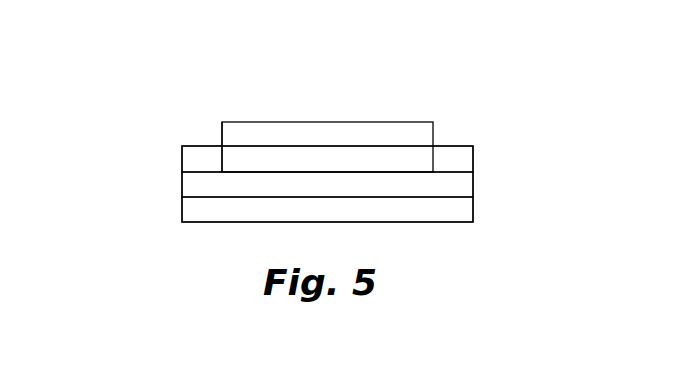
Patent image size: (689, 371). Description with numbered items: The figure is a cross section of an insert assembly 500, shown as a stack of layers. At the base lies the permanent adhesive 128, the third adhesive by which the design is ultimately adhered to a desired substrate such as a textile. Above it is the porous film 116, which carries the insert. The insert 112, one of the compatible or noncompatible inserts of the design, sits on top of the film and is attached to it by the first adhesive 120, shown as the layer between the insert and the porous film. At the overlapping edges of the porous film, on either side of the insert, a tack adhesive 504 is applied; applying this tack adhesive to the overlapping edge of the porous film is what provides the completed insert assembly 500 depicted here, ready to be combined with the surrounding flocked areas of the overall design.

The insert assembly 500 is at (148, 233).
The tack adhesive 504 is at (182, 147).
The porous film 116 is at (473, 181).
The permanent adhesive 128 is at (473, 217).
The insert 112 is at (428, 122).
The first adhesive 120 is at (240, 160).